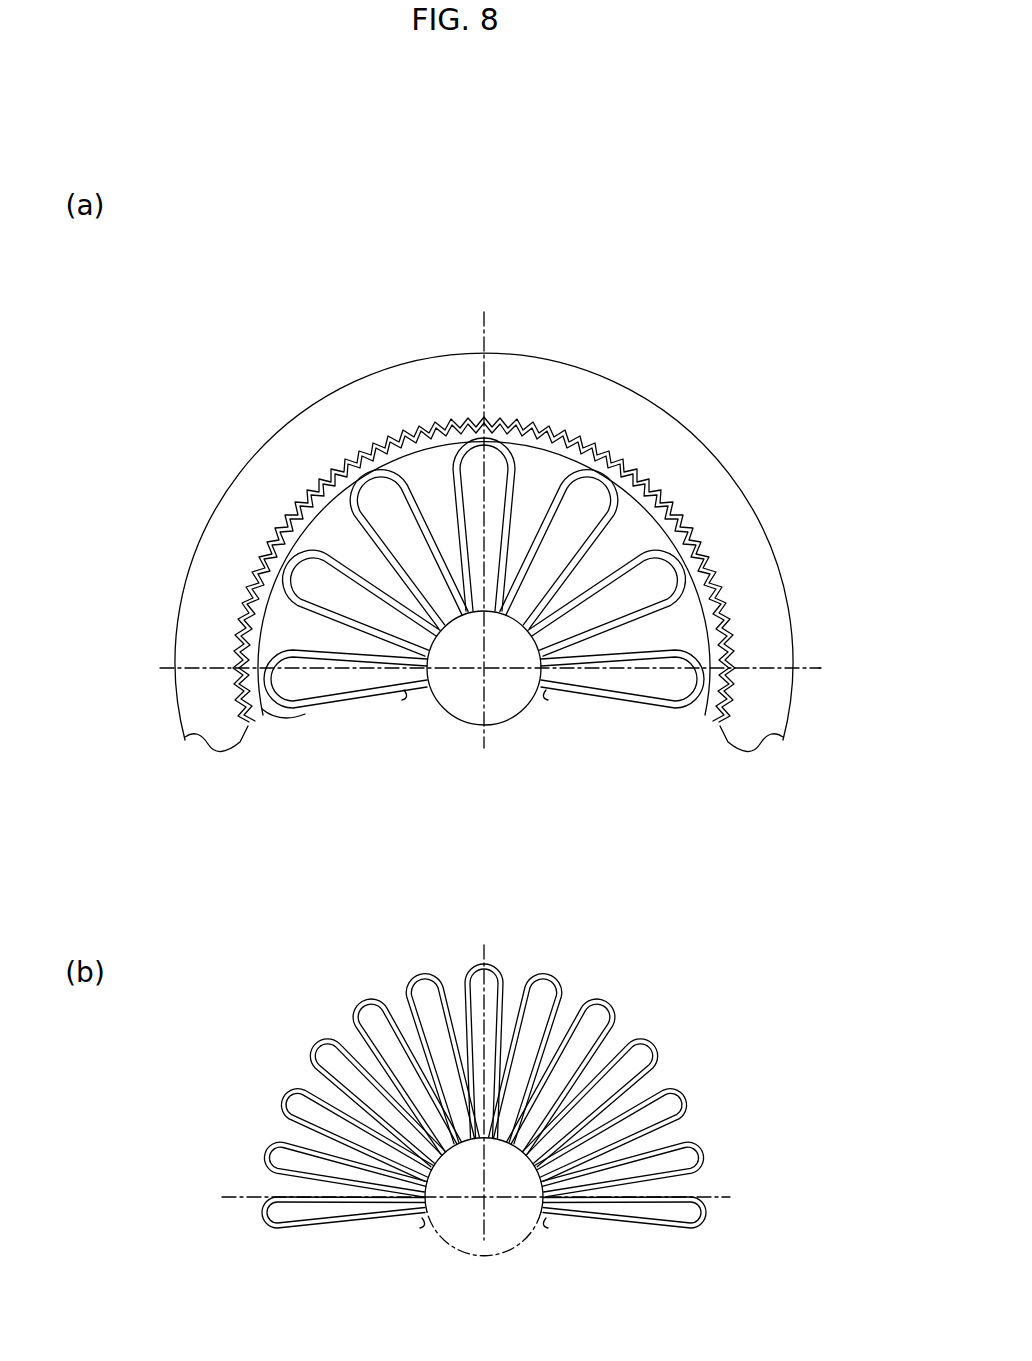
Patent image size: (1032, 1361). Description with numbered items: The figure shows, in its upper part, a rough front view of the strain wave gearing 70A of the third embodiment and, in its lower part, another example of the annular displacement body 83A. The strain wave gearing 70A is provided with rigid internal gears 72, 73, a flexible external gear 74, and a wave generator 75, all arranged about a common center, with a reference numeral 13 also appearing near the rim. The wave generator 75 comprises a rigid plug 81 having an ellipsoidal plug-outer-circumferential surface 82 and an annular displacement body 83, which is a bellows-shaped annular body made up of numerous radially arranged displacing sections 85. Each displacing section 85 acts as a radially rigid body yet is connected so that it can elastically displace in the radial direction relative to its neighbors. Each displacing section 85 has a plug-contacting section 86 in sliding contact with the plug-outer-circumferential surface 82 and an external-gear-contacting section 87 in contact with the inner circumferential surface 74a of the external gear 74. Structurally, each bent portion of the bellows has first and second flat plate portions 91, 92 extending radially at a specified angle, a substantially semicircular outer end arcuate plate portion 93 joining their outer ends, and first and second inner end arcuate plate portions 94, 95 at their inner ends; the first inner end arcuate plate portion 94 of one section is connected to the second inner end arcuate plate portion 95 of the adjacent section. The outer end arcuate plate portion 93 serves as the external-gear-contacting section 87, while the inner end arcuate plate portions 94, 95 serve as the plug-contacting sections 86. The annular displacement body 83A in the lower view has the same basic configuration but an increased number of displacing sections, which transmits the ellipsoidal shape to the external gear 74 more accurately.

The strain wave gearing 70A is at (789, 362).
The rigid internal gear 72 is at (564, 564).
The rigid internal gear 73 is at (712, 493).
The flexible external gear 74 is at (560, 539).
The inner circumferential surface 74a is at (630, 503).
The wave generator 75 is at (686, 627).
The gear 13 is at (712, 693).
The rigid plug 81 is at (503, 712).
The plug-outer-circumferential surface 82 is at (549, 708).
The annular displacement body 83 is at (644, 711).
The annular displacement body 83A is at (679, 1050).
The displacing section 85 is at (428, 511).
The plug-contacting section 86 is at (404, 694).
The external-gear-contacting section 87 is at (272, 712).
The first flat plate portion 91 is at (453, 500).
The second flat plate portion 92 is at (522, 496).
The outer end arcuate plate portion 93 is at (479, 438).
The first inner end arcuate plate portion 94 is at (420, 505).
The second inner end arcuate plate portion 95 is at (595, 357).